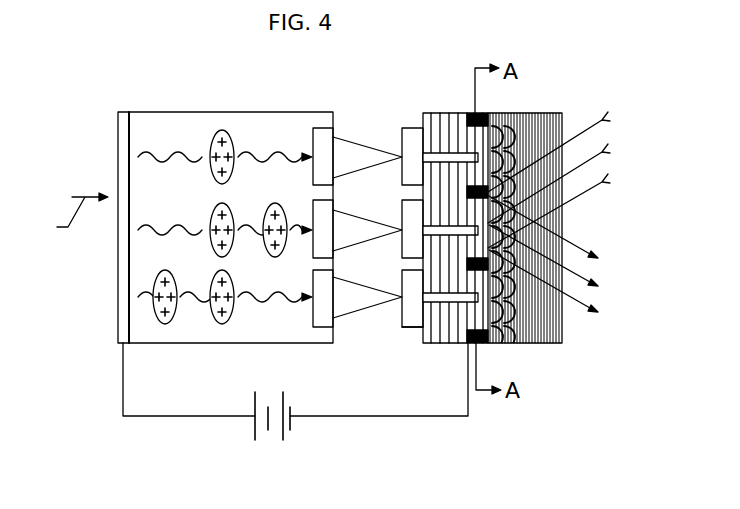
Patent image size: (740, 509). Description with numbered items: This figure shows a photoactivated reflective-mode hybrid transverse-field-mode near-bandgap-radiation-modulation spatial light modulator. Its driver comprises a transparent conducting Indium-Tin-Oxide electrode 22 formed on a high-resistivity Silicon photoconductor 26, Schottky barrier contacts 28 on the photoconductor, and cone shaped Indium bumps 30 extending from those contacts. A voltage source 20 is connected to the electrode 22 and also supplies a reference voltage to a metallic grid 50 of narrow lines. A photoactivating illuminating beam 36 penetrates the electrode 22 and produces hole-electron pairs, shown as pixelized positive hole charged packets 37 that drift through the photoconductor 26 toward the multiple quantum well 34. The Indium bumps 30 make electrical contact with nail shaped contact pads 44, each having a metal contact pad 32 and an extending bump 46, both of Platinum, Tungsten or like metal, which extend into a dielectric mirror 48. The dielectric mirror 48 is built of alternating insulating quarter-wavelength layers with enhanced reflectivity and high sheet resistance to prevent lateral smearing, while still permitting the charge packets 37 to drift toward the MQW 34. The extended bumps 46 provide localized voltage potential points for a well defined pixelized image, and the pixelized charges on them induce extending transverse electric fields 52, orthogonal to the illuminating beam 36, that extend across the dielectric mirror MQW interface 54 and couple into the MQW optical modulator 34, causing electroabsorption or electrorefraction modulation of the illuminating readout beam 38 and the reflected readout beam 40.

The voltage source 20 is at (256, 433).
The receiving transparent conducting Indium-Tin-Oxide electrode 22 is at (118, 112).
The high-resistivity Silicon photoconductor 26 is at (227, 112).
The Schottky barrier contacts 28 is at (322, 128).
The Indium bumps 30 is at (355, 143).
The metal contact pads 32 is at (413, 335).
The multiple quantum well 34 is at (558, 113).
The photoactivating illuminating beam 36 is at (69, 218).
The positive hole charged packets 37 is at (215, 138).
The illuminating readout beam 38 is at (590, 160).
The readout beam 40 is at (590, 276).
The nail shaped contact pads 44 is at (402, 140).
The extending bumps 46 is at (452, 343).
The dielectric mirror 48 is at (445, 113).
The metallic grid 50 is at (479, 343).
The extending transverse electric fields 52 is at (518, 343).
The dielectric mirror MQW interface 54 is at (488, 113).